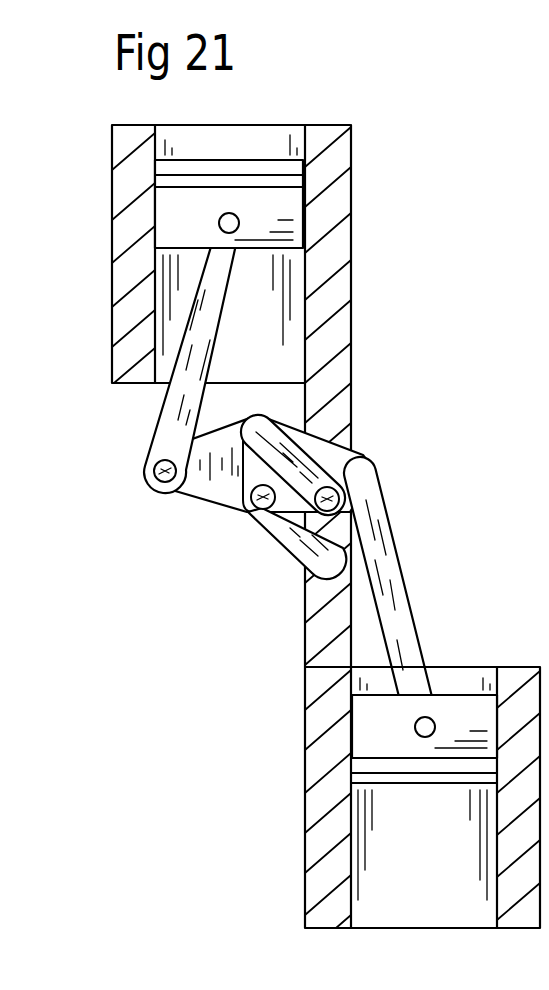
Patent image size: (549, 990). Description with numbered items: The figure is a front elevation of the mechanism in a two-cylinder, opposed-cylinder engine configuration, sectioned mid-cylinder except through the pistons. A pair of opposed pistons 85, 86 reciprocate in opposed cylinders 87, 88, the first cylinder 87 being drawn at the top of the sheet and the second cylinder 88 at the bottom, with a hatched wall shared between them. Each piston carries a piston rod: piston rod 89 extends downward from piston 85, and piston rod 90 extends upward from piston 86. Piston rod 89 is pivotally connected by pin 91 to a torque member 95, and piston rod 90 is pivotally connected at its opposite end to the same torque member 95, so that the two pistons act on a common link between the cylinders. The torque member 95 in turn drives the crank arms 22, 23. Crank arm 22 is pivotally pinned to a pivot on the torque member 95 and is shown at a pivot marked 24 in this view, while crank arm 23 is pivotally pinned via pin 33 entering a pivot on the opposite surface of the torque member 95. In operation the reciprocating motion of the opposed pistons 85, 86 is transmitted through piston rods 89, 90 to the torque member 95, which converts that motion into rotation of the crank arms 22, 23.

The piston 85 is at (272, 198).
The cylinder 87 is at (270, 297).
The piston rod 89 is at (178, 403).
The pin 91 is at (152, 468).
The torque member 95 is at (217, 478).
The pin 33 is at (254, 506).
The crank arm 23 is at (297, 542).
The crank arm 22 is at (300, 462).
The pivot pin 24 is at (338, 492).
The piston rod 90 is at (378, 523).
The piston 86 is at (382, 720).
The cylinder 88 is at (388, 830).